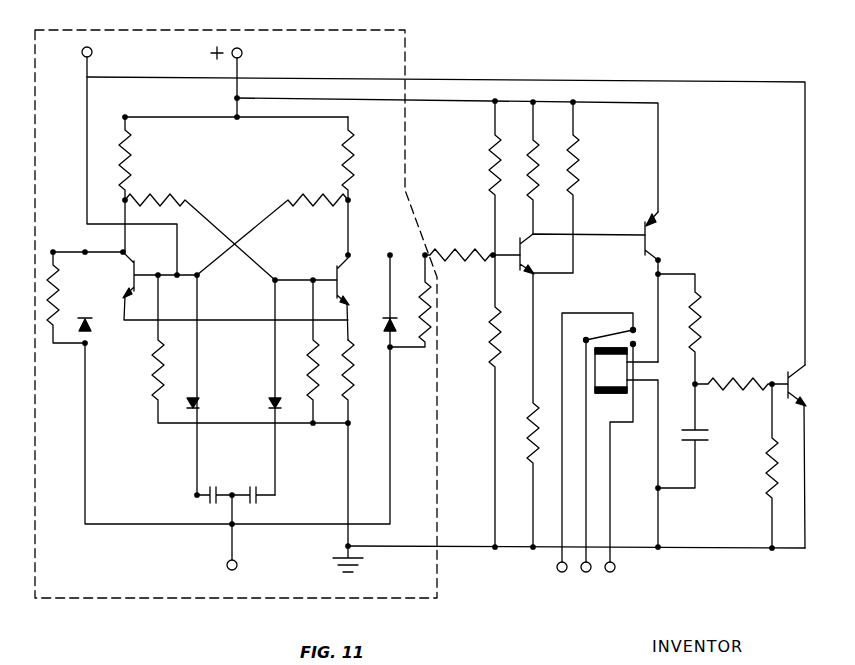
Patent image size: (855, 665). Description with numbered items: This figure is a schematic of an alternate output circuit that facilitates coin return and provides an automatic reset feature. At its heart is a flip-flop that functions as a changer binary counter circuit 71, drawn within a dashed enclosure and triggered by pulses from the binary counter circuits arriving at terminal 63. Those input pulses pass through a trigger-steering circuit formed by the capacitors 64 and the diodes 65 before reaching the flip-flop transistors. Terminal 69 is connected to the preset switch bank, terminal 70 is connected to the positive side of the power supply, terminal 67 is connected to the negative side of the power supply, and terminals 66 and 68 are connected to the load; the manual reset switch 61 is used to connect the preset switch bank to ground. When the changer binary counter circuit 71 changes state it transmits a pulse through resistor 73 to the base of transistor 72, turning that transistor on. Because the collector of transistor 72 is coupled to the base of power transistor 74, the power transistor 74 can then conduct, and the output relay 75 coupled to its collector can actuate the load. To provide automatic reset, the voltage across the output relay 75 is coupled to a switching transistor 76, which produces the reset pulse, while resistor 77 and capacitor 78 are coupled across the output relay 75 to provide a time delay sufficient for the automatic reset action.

The manual reset switch 61 is at (190, 627).
The terminal 63 is at (235, 546).
The capacitors 64 is at (252, 490).
The diodes 65 is at (88, 330).
The terminal 66 is at (559, 574).
The terminal 67 is at (586, 574).
The terminal 68 is at (612, 574).
The terminal 69 is at (93, 52).
The terminal 70 is at (243, 53).
The changer binary counter circuit 71 is at (112, 600).
The transistor 72 is at (524, 249).
The resistor 73 is at (461, 250).
The power transistor 74 is at (655, 233).
The output relay 75 is at (607, 394).
The switching transistor 76 is at (795, 393).
The resistor 77 is at (698, 318).
The capacitor 78 is at (703, 442).